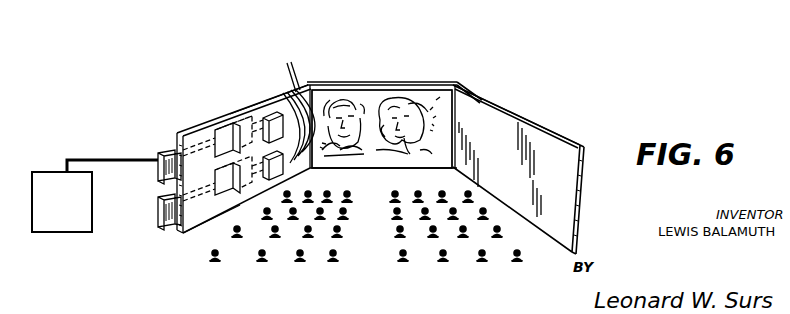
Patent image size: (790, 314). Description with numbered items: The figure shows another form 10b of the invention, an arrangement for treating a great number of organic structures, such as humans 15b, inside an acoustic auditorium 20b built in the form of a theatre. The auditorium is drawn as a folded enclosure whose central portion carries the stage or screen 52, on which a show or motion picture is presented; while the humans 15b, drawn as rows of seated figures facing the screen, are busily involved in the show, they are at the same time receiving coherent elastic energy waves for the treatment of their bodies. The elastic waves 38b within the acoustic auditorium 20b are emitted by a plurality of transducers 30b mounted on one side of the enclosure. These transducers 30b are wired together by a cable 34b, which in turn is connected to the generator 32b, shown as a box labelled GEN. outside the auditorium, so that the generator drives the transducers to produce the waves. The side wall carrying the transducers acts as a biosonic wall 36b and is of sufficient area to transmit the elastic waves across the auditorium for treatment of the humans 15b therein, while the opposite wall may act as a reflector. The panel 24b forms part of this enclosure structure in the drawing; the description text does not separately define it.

The form of the invention 10b is at (540, 90).
The humans 15b is at (440, 258).
The acoustic auditorium 20b is at (268, 77).
The panel 24b is at (203, 137).
The transducers 30b is at (168, 150).
The generator 32b is at (85, 228).
The cable 34b is at (119, 164).
The biosonic wall 36b is at (211, 213).
The elastic waves 38b is at (303, 105).
The stage or screen 52 is at (417, 90).